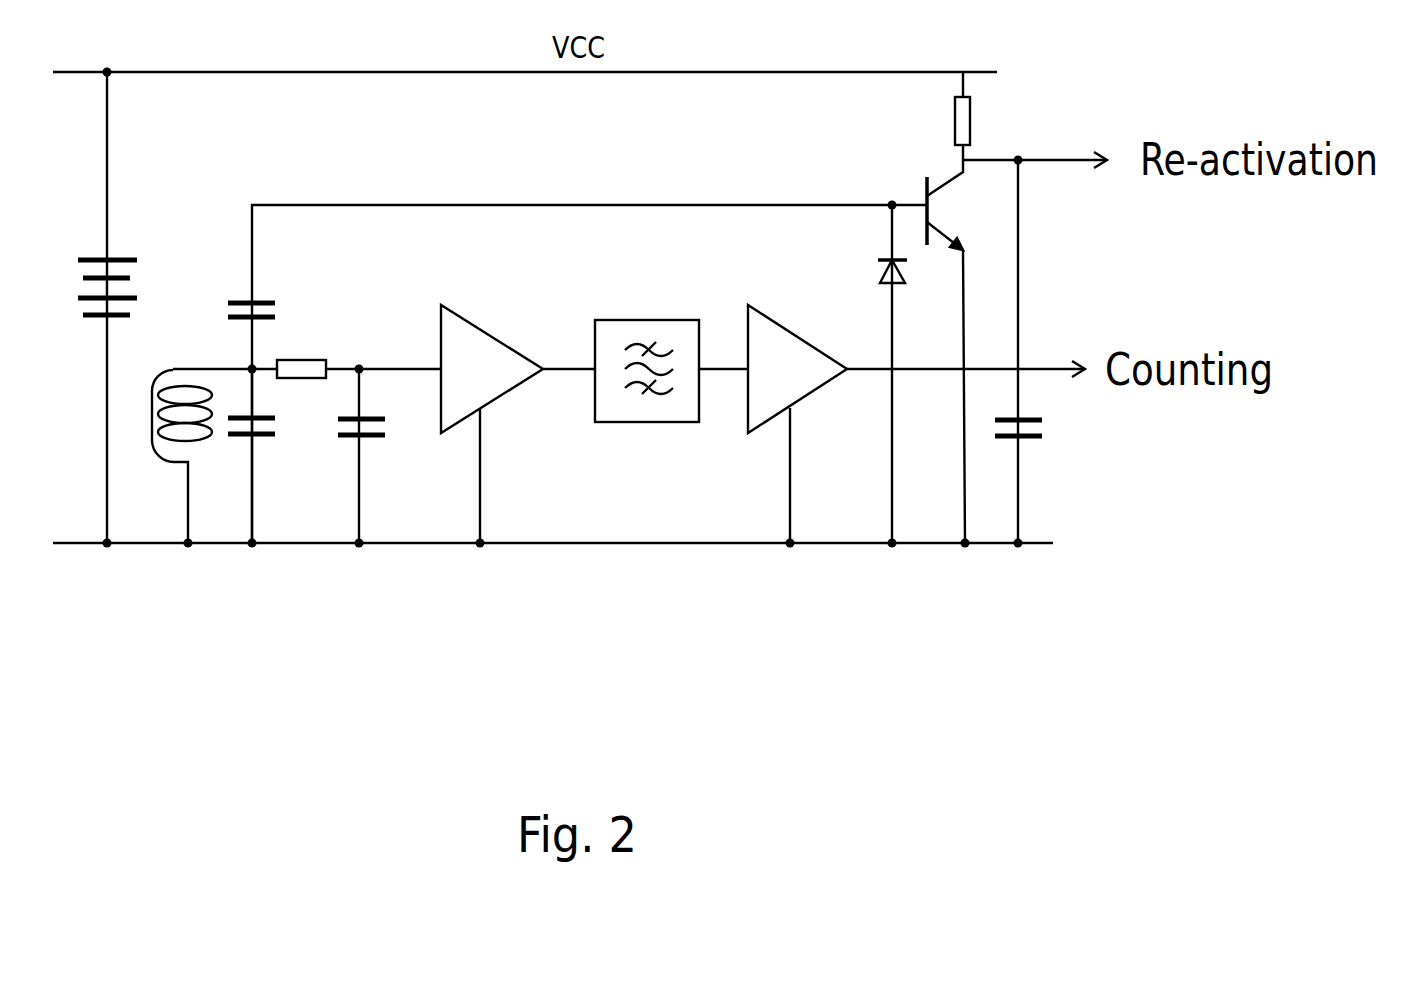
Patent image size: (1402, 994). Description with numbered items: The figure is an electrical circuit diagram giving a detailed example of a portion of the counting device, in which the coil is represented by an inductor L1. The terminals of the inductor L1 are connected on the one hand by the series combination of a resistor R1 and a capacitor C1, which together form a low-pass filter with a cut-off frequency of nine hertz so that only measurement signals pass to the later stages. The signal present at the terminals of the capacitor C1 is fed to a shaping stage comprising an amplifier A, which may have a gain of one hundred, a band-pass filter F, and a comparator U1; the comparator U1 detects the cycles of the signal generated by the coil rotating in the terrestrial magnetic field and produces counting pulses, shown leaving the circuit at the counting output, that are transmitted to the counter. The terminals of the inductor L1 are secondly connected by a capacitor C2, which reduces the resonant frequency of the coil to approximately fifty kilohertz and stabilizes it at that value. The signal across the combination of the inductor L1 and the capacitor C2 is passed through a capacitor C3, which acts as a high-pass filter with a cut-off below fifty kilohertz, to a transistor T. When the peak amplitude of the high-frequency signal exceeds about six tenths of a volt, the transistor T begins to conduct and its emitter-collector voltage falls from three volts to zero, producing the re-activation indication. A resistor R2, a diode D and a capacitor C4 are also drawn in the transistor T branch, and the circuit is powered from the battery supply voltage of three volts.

The inductor L1 is at (179, 456).
The capacitor C1 is at (384, 456).
The capacitor C2 is at (266, 456).
The capacitor C3 is at (227, 310).
The capacitor C4 is at (1042, 351).
The resistor R1 is at (301, 352).
The resistor R2 is at (1009, 120).
The amplifier A is at (492, 424).
The band-pass filter F is at (647, 350).
The comparator U1 is at (797, 424).
The diode D is at (877, 374).
The transistor T is at (957, 351).